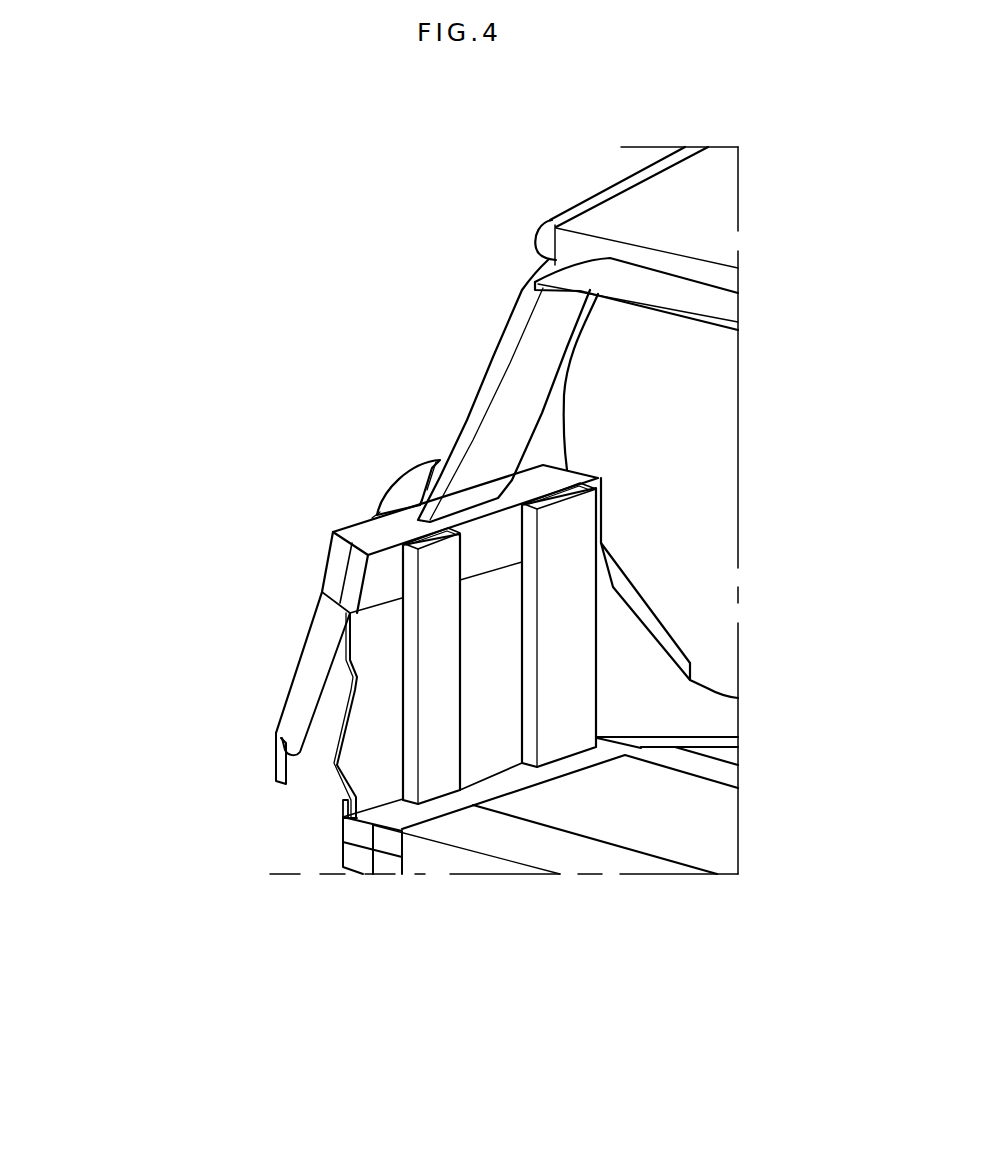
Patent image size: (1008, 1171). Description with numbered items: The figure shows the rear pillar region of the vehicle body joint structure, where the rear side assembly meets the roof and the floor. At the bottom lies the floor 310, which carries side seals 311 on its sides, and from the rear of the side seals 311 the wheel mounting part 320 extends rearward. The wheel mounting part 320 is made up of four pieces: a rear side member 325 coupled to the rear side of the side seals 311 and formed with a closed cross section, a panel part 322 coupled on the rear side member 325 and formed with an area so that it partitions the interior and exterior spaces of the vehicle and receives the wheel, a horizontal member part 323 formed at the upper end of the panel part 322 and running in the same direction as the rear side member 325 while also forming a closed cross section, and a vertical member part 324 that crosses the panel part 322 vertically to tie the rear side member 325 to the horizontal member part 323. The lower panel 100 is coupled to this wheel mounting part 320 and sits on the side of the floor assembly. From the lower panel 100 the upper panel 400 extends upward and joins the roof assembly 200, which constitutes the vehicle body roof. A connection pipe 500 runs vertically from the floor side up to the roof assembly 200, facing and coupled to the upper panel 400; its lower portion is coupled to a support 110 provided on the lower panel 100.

The lower panel 100 is at (323, 620).
The support 110 is at (400, 497).
The roof assembly 200 is at (567, 206).
The floor 310 is at (702, 828).
The side seals 311 is at (708, 745).
The wheel mounting part 320 is at (241, 762).
The panel part 322 is at (380, 695).
The horizontal member part 323 is at (384, 582).
The vertical member part 324 is at (438, 748).
The rear side member 325 is at (385, 863).
The upper panel 400 is at (568, 405).
The connection pipe 500 is at (462, 391).